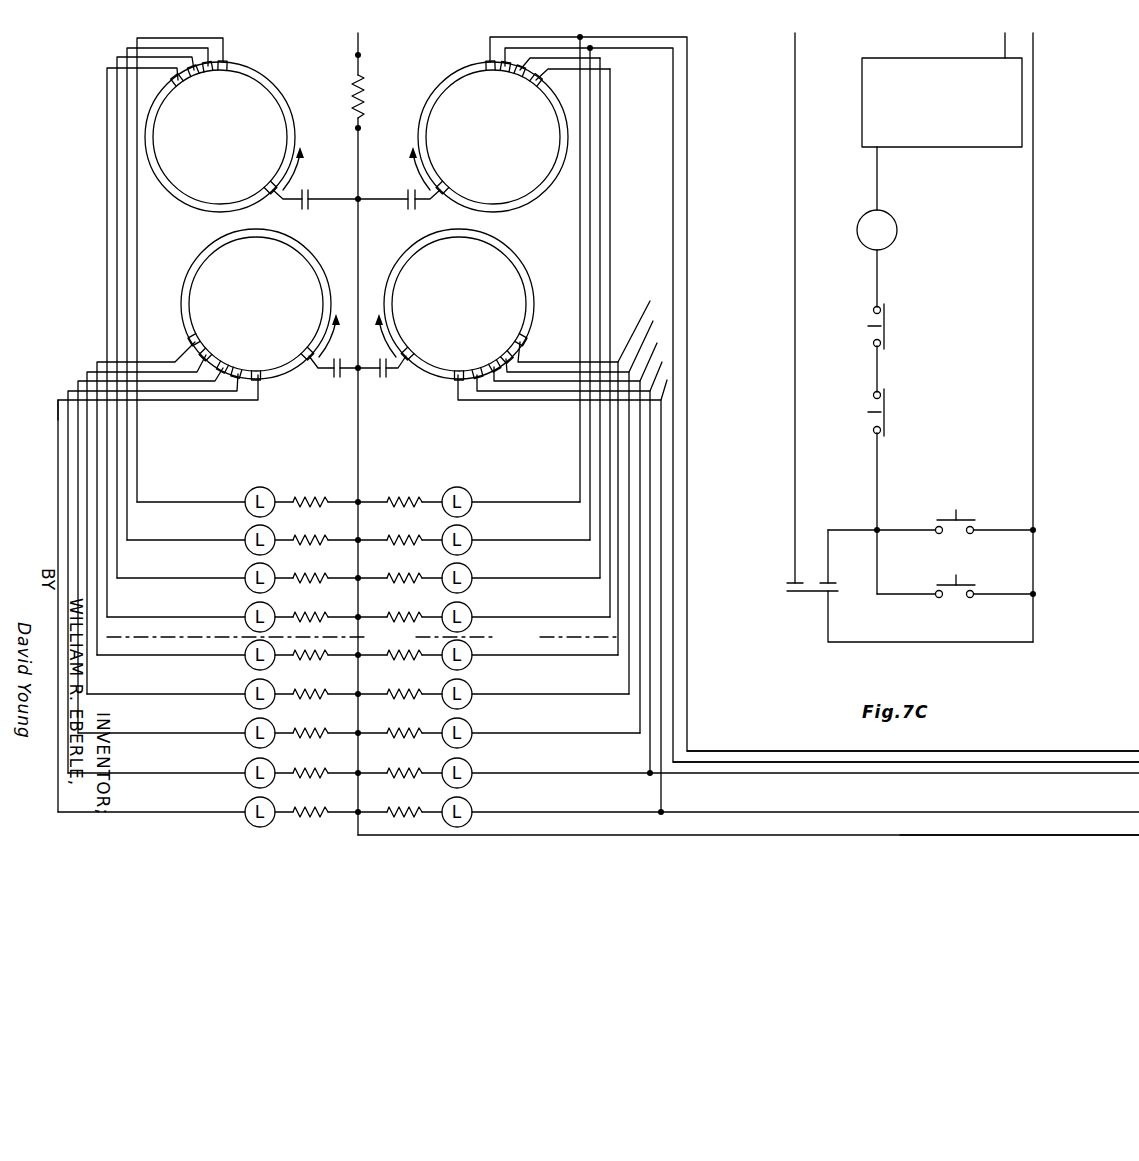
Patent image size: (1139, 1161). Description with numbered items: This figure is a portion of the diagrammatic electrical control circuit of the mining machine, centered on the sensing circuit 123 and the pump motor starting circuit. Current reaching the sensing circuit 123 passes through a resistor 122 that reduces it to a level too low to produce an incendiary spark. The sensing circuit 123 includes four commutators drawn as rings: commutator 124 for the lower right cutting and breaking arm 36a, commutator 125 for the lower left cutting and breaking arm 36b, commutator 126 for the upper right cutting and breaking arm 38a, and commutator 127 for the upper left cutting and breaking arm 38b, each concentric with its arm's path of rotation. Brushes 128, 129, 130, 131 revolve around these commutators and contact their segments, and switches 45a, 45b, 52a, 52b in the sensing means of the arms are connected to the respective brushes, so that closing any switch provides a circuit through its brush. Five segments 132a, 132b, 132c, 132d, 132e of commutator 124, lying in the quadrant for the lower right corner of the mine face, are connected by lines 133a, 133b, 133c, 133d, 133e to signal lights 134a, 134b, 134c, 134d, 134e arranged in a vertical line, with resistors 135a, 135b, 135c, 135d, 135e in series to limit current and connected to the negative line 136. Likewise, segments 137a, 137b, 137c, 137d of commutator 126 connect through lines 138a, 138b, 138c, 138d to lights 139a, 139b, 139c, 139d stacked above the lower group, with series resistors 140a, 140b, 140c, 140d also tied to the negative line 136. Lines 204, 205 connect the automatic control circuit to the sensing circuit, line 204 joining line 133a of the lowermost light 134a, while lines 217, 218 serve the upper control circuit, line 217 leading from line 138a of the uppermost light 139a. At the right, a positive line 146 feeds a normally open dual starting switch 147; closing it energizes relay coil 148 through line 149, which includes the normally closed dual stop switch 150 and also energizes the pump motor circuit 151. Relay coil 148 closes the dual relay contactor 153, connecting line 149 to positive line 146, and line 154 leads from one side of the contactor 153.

The resistor 122 is at (352, 88).
The sensing circuit 123 is at (96, 316).
The commutator 124 is at (505, 252).
The commutator 125 is at (204, 252).
The commutator 126 is at (508, 204).
The commutator 127 is at (201, 207).
The brush 128 is at (403, 358).
The brush 129 is at (311, 358).
The brush 130 is at (431, 195).
The brush 131 is at (283, 195).
The commutator segment 132a is at (458, 370).
The commutator segment 132b is at (476, 368).
The commutator segment 132c is at (496, 360).
The commutator segment 132d is at (508, 352).
The commutator segment 132e is at (522, 341).
The line 133a is at (667, 380).
The line 133b is at (662, 362).
The line 133c is at (657, 343).
The line 133d is at (653, 321).
The line 133e is at (650, 301).
The signal light 134a is at (472, 808).
The signal light 134b is at (472, 769).
The signal light 134c is at (472, 729).
The signal light 134d is at (472, 690).
The signal light 134e is at (472, 651).
The resistor 135a is at (412, 790).
The resistor 135b is at (412, 751).
The resistor 135c is at (412, 711).
The resistor 135d is at (412, 672).
The resistor 135e is at (412, 634).
The negative line 136 is at (1050, 835).
The commutator segment 137a is at (518, 70).
The commutator segment 137b is at (504, 78).
The commutator segment 137c is at (522, 80).
The commutator segment 137d is at (534, 86).
The line 138a is at (490, 37).
The line 138b is at (505, 48).
The line 138c is at (600, 58).
The line 138d is at (610, 69).
The light 139a is at (472, 498).
The light 139b is at (472, 536).
The light 139c is at (472, 574).
The light 139d is at (472, 613).
The resistor 140a is at (412, 480).
The resistor 140b is at (412, 518).
The resistor 140c is at (412, 556).
The resistor 140d is at (412, 595).
The positive line 146 is at (1035, 380).
The dual starting switch 147 is at (937, 536).
The relay coil 148 is at (898, 232).
The line 149 is at (877, 468).
The dual stop switch 150 is at (868, 327).
The pump motor circuit 151 is at (866, 58).
The dual relay contactor 153 is at (808, 598).
The line 154 is at (795, 476).
The line 204 is at (950, 812).
The line 205 is at (855, 773).
The line 217 is at (740, 751).
The line 218 is at (800, 762).
The lower cutting and breaking arm 36a is at (459, 295).
The lower cutting and breaking arm 36b is at (256, 295).
The upper cutting and breaking arm 38a is at (493, 147).
The upper cutting and breaking arm 38b is at (220, 147).
The switch 45a is at (383, 380).
The switch 45b is at (336, 380).
The switch 52a is at (410, 194).
The switch 52b is at (306, 194).